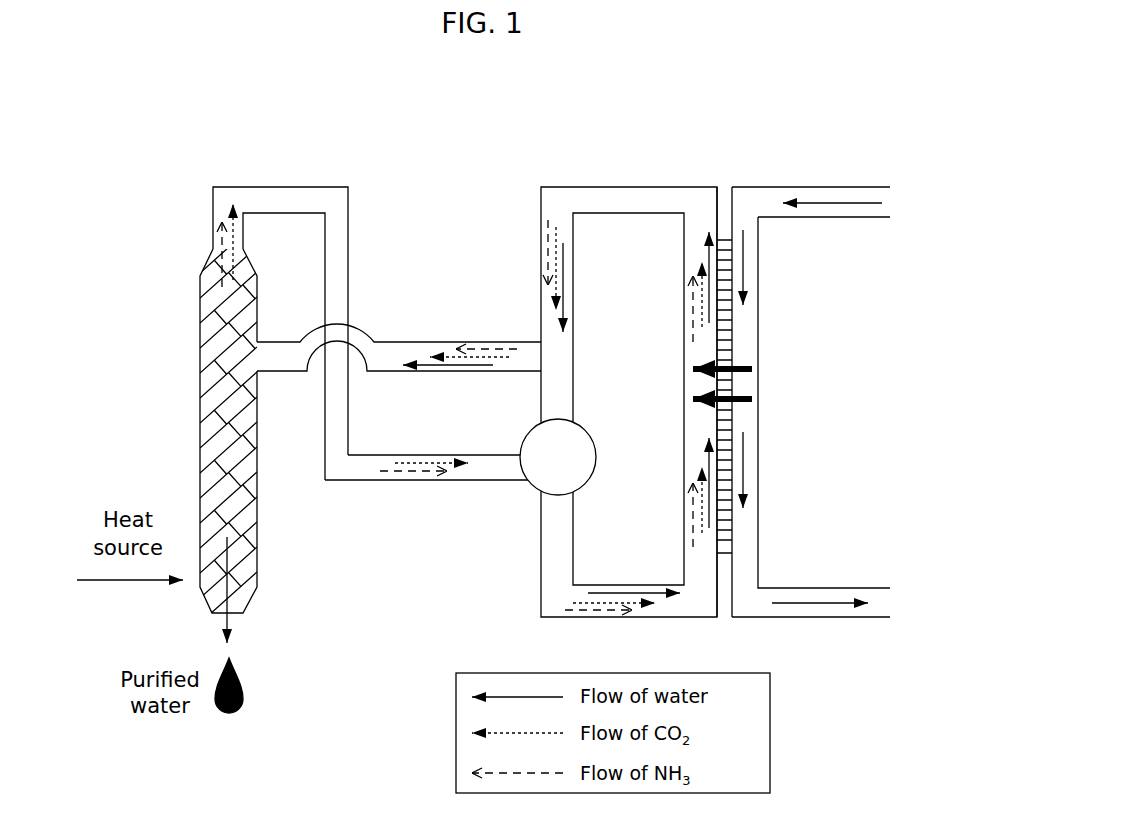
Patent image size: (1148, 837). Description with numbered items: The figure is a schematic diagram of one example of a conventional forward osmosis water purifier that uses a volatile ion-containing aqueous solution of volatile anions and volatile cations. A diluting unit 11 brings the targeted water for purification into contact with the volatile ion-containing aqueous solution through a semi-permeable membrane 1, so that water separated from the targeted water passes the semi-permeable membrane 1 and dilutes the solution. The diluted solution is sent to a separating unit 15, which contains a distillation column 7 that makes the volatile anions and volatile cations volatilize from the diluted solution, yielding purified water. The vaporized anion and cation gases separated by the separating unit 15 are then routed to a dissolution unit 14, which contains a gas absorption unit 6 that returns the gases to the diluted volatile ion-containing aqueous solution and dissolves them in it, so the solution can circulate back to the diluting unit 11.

The semi-permeable membrane 1 is at (725, 345).
The gas absorption unit 6 is at (580, 442).
The distillation column 7 is at (205, 381).
The diluting unit 11 is at (725, 180).
The dissolution unit 14 is at (524, 502).
The separating unit 15 is at (229, 180).